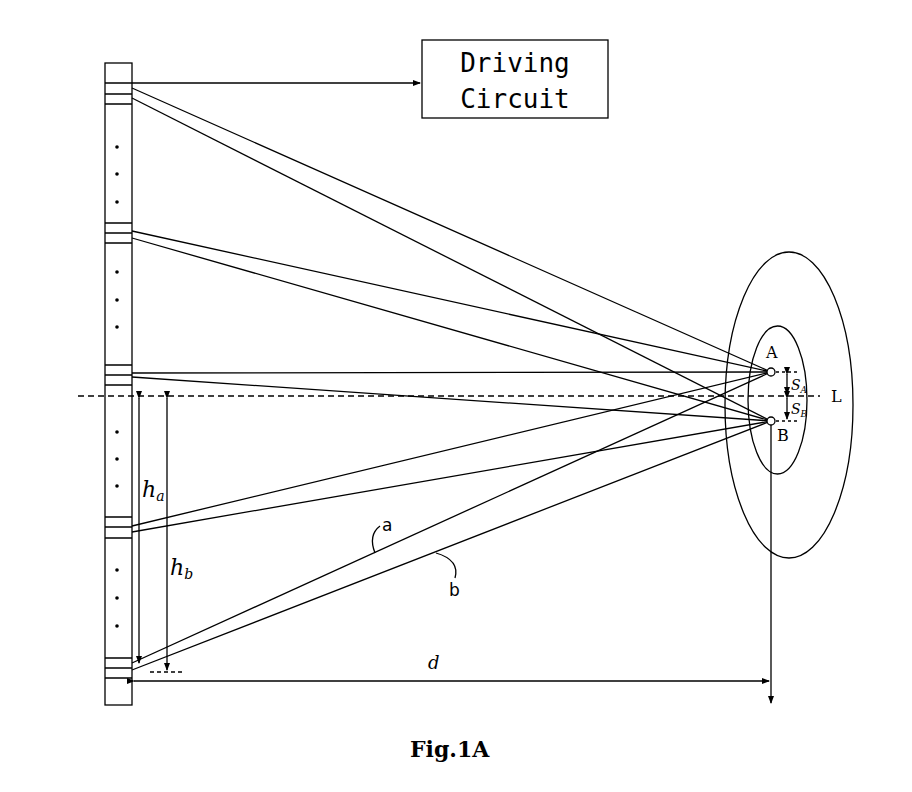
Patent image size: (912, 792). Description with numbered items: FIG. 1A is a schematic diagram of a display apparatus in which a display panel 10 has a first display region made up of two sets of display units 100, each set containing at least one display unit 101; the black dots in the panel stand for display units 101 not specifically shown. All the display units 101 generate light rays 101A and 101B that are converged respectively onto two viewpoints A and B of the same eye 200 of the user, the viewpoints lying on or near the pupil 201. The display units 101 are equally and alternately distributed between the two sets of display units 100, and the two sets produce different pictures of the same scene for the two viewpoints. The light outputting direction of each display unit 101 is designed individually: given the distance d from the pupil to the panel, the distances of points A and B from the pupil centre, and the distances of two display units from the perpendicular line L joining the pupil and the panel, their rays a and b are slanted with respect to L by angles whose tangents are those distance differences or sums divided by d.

The display panel 10 is at (123, 62).
The set of display units 100 is at (78, 128).
The display unit 101 is at (152, 77).
The light ray 101A is at (310, 167).
The light ray 101B is at (338, 206).
The eye 200 is at (735, 305).
The pupil 201 is at (777, 326).